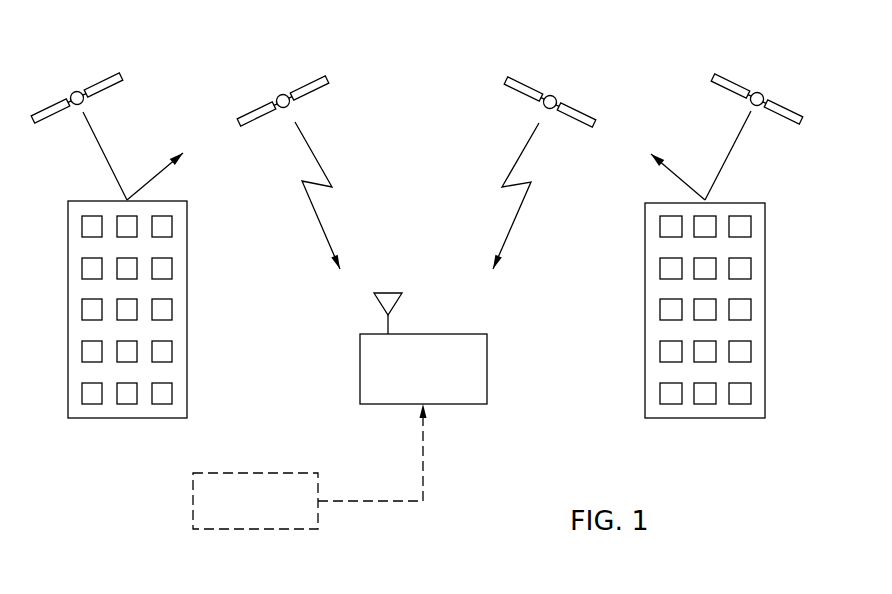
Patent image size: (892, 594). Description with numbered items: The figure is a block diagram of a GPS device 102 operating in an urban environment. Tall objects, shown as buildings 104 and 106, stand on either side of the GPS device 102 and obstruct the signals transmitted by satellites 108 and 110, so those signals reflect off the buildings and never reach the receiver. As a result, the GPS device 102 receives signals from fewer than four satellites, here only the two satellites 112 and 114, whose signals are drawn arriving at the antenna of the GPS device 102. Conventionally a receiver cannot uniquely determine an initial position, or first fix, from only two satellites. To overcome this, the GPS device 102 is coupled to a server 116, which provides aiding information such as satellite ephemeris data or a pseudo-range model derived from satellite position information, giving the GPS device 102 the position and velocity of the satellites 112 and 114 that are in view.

The GPS device 102 is at (456, 404).
The building 104 is at (68, 291).
The building 106 is at (765, 292).
The satellite 108 is at (70, 91).
The satellite 110 is at (762, 92).
The satellite 112 is at (280, 94).
The satellite 114 is at (553, 94).
The server 116 is at (235, 529).